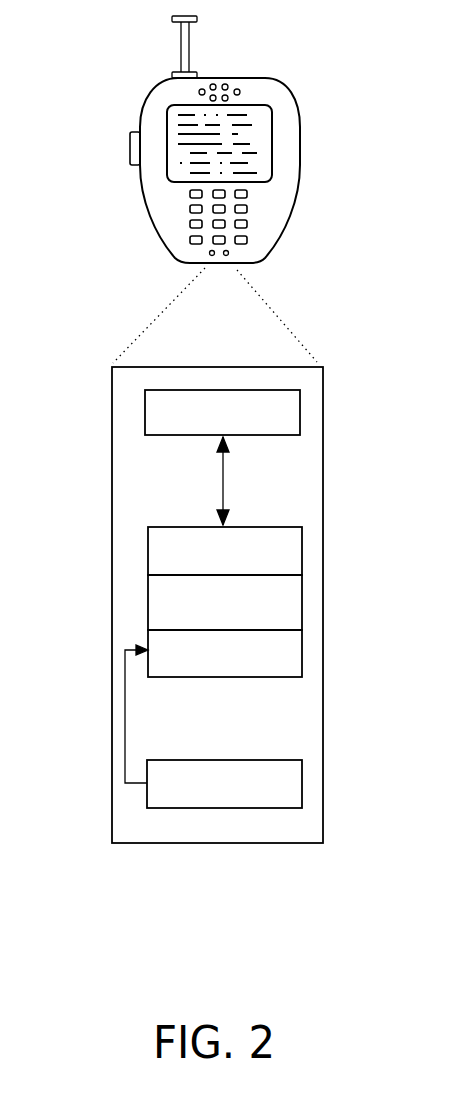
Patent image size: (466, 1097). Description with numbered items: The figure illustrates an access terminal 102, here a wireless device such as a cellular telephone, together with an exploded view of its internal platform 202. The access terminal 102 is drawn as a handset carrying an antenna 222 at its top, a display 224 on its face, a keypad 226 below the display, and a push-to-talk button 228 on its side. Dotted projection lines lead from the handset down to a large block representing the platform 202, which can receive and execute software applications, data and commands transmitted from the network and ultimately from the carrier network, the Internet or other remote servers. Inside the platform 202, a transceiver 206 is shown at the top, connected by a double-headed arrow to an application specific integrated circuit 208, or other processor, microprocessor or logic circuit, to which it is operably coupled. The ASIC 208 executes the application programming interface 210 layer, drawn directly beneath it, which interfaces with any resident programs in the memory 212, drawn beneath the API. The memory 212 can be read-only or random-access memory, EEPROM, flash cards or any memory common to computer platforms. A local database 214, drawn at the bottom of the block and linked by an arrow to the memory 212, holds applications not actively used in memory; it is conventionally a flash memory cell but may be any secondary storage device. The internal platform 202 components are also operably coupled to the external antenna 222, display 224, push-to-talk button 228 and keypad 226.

The access terminal 102 is at (280, 245).
The platform 202 is at (112, 525).
The transceiver 206 is at (300, 414).
The application specific integrated circuit 208 is at (302, 558).
The application programming interface 210 is at (302, 597).
The memory 212 is at (302, 652).
The local database 214 is at (302, 768).
The antenna 222 is at (190, 28).
The display 224 is at (272, 133).
The keypad 226 is at (248, 208).
The push-to-talk button 228 is at (130, 141).